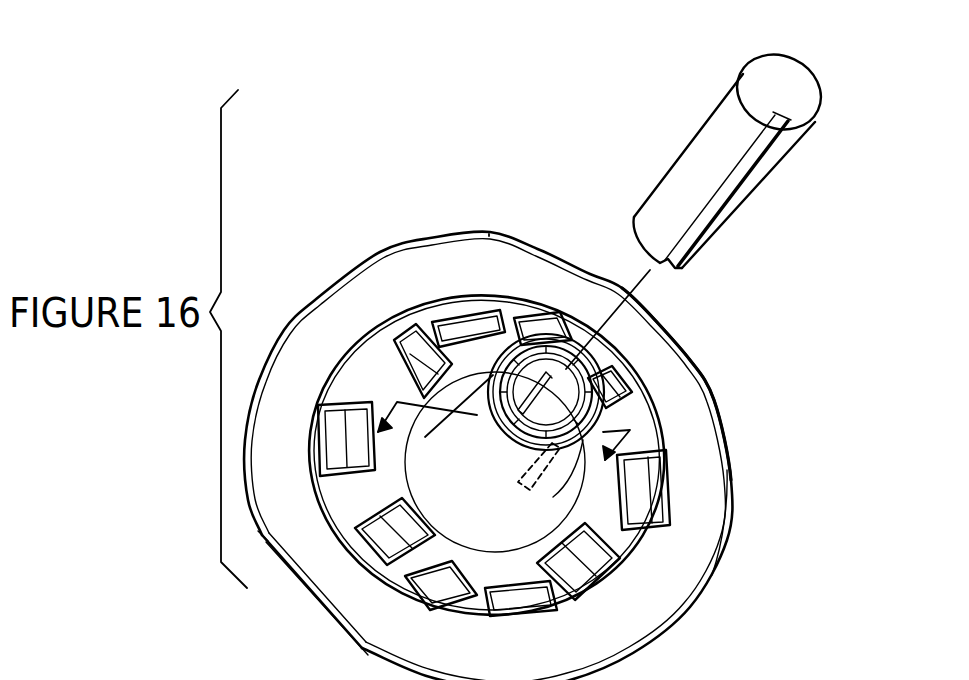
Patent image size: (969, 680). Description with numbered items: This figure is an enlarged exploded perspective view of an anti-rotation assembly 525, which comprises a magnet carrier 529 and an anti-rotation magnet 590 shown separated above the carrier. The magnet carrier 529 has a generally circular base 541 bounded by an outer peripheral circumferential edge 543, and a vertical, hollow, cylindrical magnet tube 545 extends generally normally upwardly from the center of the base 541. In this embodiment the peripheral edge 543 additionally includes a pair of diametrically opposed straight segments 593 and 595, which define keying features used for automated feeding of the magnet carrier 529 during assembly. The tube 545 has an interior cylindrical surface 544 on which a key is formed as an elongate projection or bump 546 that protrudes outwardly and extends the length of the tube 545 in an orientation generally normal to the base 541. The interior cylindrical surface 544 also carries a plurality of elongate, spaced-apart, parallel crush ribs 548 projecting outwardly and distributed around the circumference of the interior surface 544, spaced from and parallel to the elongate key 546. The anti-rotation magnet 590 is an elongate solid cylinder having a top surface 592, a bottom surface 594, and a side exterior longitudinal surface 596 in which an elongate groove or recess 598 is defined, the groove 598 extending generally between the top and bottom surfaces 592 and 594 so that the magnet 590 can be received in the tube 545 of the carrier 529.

The anti-rotation assembly 525 is at (497, 195).
The magnet carrier 529 is at (326, 291).
The base 541 is at (650, 377).
The outer peripheral circumferential edge 543 is at (727, 442).
The interior cylindrical surface 544 is at (586, 347).
The magnet tube 545 is at (490, 372).
The key 546 is at (518, 482).
The crush ribs 548 is at (541, 373).
The anti-rotation magnet 590 is at (745, 58).
The top surface 592 is at (764, 92).
The straight segment 593 is at (315, 605).
The bottom surface 594 is at (648, 260).
The straight segment 595 is at (683, 357).
The side exterior longitudinal surface 596 is at (708, 153).
The groove 598 is at (772, 147).